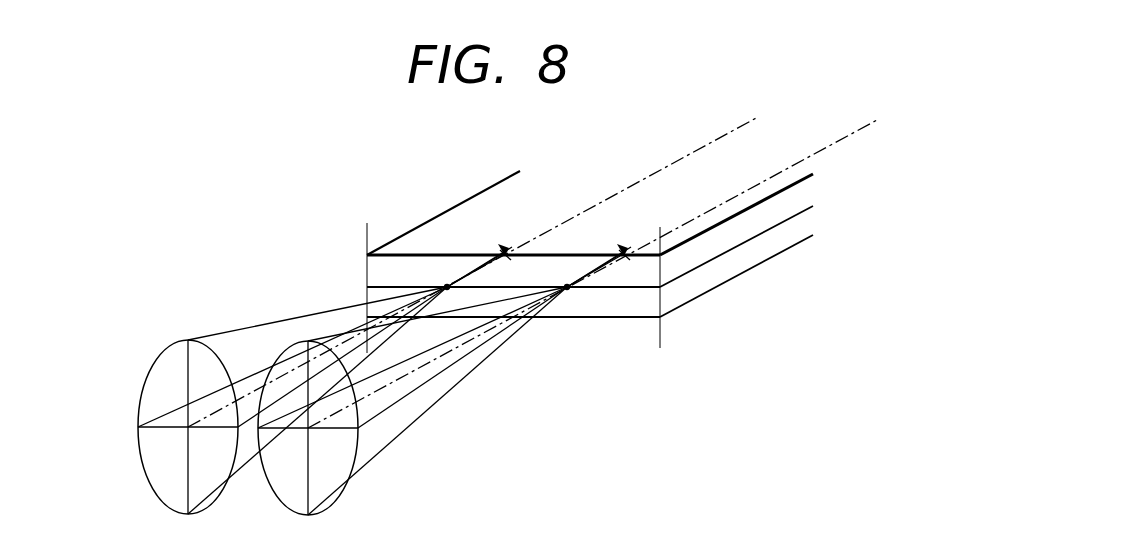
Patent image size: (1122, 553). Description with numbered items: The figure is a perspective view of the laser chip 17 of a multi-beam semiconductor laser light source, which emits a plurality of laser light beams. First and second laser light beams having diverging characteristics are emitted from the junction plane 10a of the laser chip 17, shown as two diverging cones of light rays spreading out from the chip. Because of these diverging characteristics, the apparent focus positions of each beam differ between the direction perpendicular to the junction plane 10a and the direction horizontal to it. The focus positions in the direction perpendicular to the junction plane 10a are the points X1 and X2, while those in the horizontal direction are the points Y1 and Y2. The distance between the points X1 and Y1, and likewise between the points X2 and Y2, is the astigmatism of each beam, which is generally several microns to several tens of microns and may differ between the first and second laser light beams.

The junction plane 10a is at (531, 287).
The laser chip 17 is at (625, 318).
The focus position of first laser light beam in direction perpendicular to junction X1 is at (567, 290).
The focus position of second laser light beam in direction perpendicular to junction X2 is at (447, 287).
The focus position of first laser light beam in horizontal direction Y1 is at (624, 253).
The focus position of second laser light beam in horizontal direction Y2 is at (504, 252).